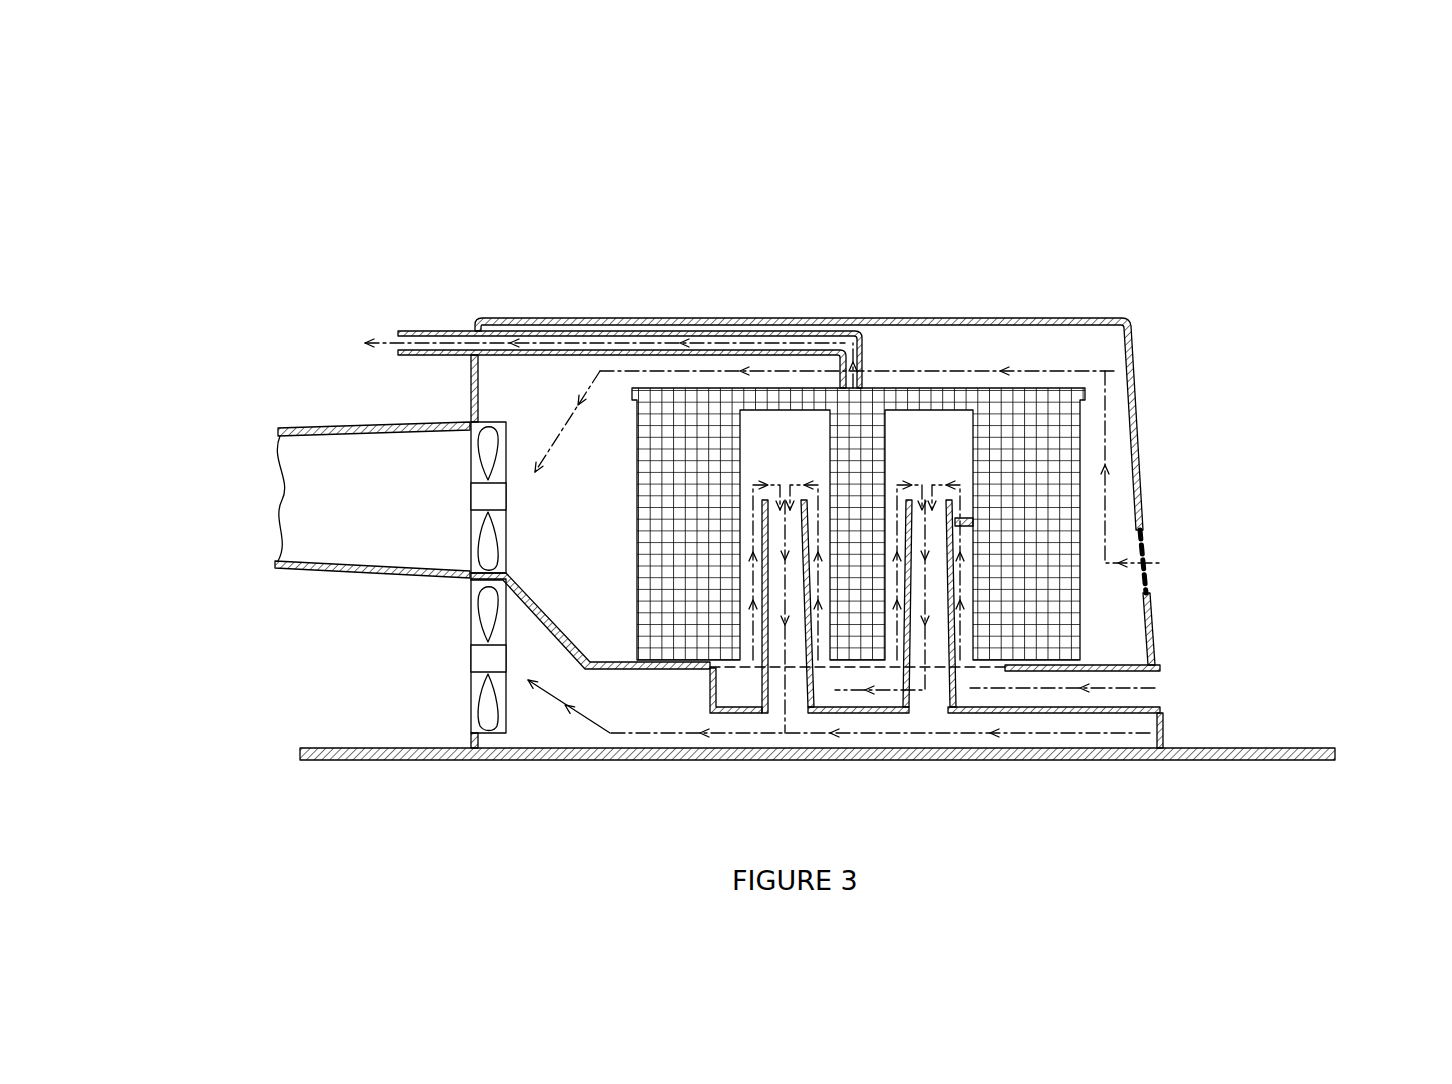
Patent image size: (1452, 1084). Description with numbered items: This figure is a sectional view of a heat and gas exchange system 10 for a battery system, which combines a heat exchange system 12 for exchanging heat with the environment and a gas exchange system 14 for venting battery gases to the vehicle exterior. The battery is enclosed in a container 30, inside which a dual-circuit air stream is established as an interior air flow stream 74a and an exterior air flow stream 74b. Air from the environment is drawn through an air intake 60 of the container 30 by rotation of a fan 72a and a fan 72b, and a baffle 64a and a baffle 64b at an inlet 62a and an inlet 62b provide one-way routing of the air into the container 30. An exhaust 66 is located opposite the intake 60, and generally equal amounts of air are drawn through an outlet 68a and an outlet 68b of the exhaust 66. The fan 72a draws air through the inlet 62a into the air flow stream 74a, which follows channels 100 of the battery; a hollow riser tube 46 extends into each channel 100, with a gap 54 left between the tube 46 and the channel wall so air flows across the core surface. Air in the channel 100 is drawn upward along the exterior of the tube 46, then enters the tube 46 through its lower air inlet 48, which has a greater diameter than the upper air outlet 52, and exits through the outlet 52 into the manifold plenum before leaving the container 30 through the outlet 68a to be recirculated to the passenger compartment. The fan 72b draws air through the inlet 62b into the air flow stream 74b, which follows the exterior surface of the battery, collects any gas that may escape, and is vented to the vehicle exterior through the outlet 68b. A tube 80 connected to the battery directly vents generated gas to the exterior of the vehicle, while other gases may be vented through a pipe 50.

The heat and gas exchange system 10 is at (1262, 205).
The heat exchange system 12 is at (210, 750).
The gas exchange system 14 is at (190, 365).
The container 30 is at (1134, 325).
The riser tube 46 is at (763, 675).
The lower air inlet 48 is at (960, 693).
The pipe 50 is at (318, 426).
The upper air outlet 52 is at (908, 520).
The gap 54 is at (967, 517).
The air intake 60 is at (1330, 573).
The inlet 62a is at (1228, 703).
The inlet 62b is at (1185, 525).
The baffle 64a is at (1168, 672).
The baffle 64b is at (1150, 588).
The exhaust 66 is at (178, 570).
The outlet 68a is at (405, 655).
The outlet 68b is at (312, 512).
The fan 72a is at (472, 676).
The fan 72b is at (470, 520).
The interior air flow stream 74a is at (1100, 725).
The exterior air flow stream 74b is at (1110, 410).
The tube 80 is at (421, 330).
The channel 100 is at (798, 437).